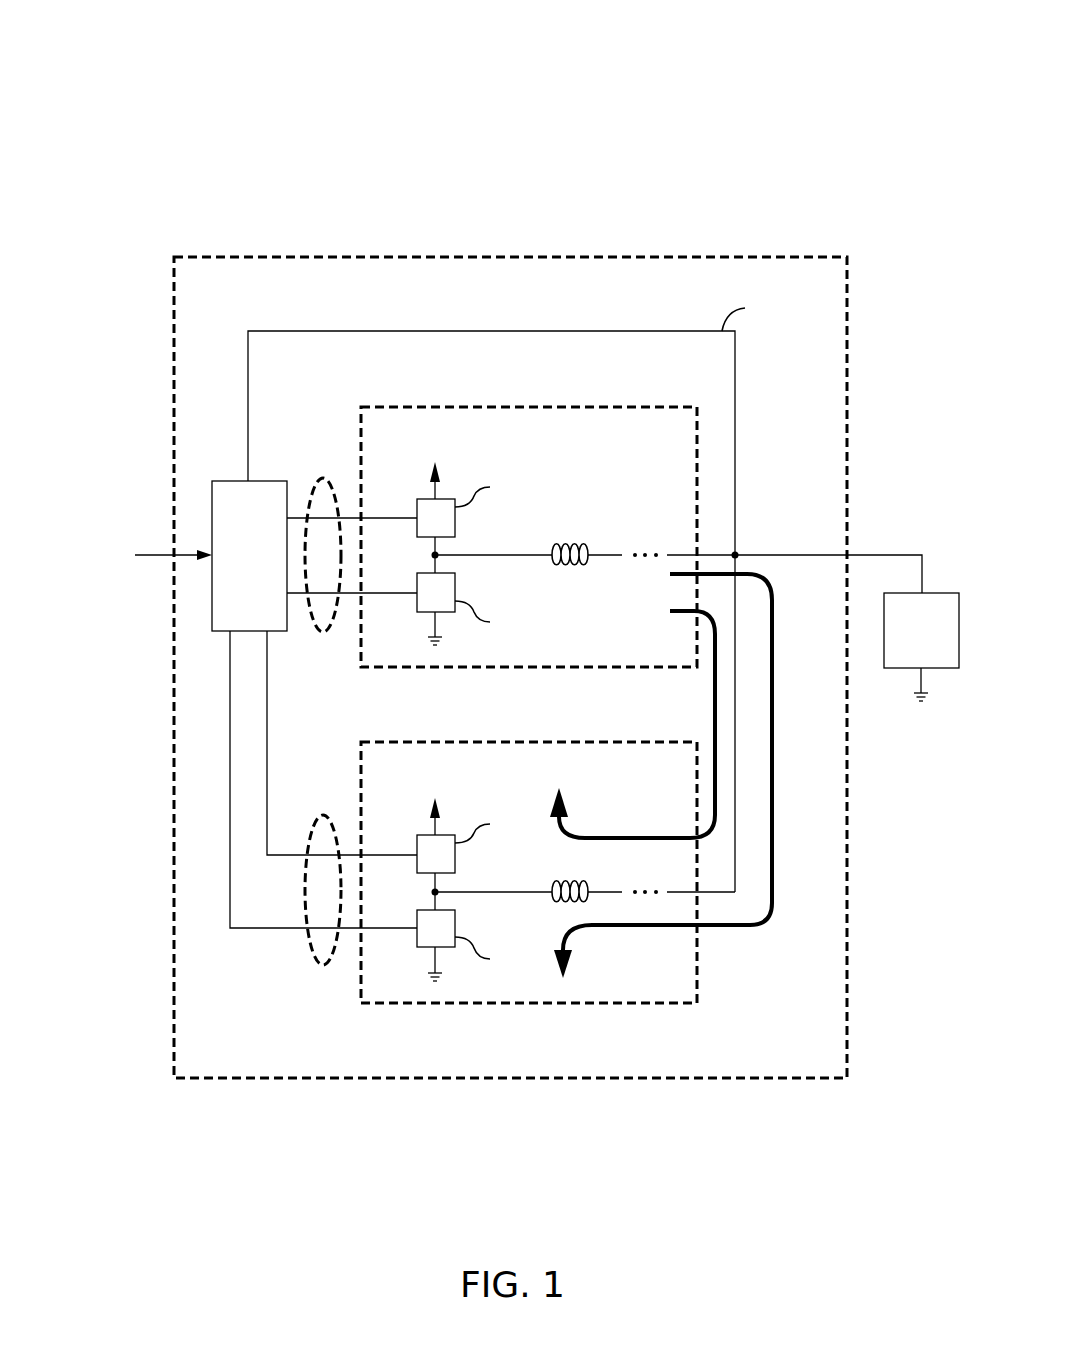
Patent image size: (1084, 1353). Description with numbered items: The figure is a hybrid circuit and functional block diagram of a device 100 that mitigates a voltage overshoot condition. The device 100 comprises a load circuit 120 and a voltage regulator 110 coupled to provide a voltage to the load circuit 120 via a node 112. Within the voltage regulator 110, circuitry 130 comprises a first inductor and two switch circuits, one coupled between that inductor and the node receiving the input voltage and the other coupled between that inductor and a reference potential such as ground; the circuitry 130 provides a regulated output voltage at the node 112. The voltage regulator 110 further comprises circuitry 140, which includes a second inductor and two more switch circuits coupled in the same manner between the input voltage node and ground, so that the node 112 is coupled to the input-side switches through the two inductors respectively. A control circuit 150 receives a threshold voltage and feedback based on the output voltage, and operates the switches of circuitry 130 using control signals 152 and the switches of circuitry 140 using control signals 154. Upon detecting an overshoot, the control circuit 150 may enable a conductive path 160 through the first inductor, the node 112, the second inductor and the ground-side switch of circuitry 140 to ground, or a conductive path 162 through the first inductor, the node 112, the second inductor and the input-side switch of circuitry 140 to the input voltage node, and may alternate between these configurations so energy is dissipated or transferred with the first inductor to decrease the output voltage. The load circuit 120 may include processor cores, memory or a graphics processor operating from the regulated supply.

The device 100 is at (124, 73).
The voltage regulator 110 is at (748, 257).
The node 112 is at (749, 545).
The load circuit 120 is at (921, 647).
The circuitry 130 is at (598, 407).
The circuitry 140 is at (598, 742).
The control circuit 150 is at (249, 556).
The control signals 152 is at (321, 480).
The control signals 154 is at (318, 962).
The conductive path 160 is at (730, 927).
The conductive path 162 is at (597, 836).